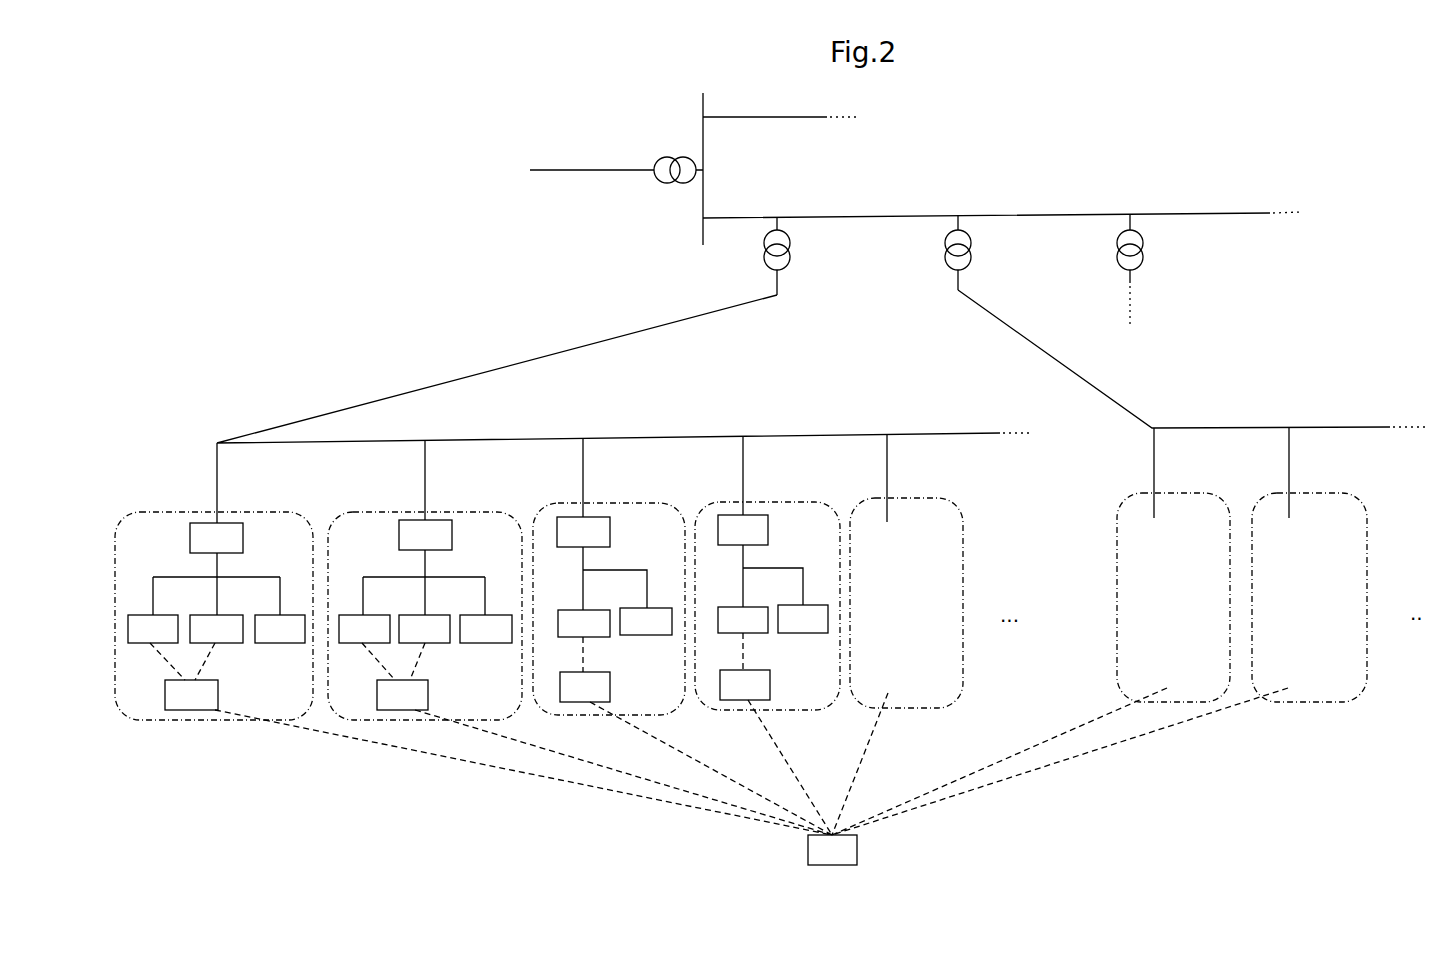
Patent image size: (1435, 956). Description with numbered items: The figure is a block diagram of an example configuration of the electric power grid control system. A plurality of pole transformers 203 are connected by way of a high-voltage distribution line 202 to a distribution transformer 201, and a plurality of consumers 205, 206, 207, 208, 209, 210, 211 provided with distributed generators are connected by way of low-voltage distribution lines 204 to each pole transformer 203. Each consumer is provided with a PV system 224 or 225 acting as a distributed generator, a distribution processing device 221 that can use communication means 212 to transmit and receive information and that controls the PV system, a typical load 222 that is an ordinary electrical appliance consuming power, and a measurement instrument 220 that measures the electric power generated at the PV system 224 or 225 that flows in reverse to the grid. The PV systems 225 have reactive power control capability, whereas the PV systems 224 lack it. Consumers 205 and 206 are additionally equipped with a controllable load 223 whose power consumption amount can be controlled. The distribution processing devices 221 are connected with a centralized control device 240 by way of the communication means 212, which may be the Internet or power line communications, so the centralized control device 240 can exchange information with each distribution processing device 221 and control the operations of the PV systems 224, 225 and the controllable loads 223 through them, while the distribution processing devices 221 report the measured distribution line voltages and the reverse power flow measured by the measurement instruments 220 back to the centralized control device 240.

The distribution transformer 201 is at (666, 150).
The high-voltage distribution line 202 is at (857, 210).
The pole transformer 203 is at (790, 272).
The low-voltage distribution line 204 is at (705, 433).
The consumer 205 is at (214, 581).
The consumer 206 is at (425, 580).
The consumer 207 is at (609, 576).
The consumer 208 is at (767, 573).
The consumer 209 is at (906, 571).
The consumer 210 is at (1173, 565).
The consumer 211 is at (1309, 564).
The communication means 212 is at (522, 787).
The measurement instrument 220 is at (478, 565).
The distribution processing device 221 is at (460, 671).
The typical load 222 is at (541, 624).
The controllable load 223 is at (320, 629).
The PV system 224 is at (553, 625).
The PV system 225 is at (369, 626).
The centralized control device 240 is at (832, 850).